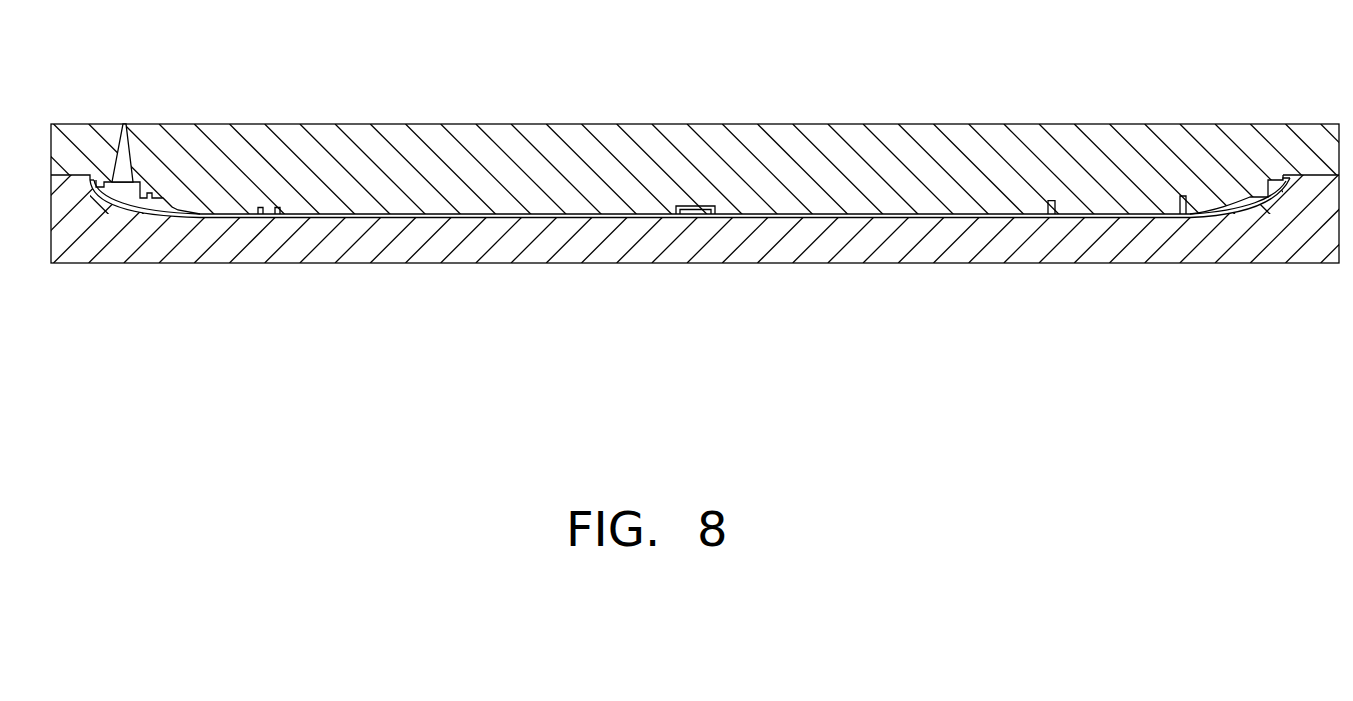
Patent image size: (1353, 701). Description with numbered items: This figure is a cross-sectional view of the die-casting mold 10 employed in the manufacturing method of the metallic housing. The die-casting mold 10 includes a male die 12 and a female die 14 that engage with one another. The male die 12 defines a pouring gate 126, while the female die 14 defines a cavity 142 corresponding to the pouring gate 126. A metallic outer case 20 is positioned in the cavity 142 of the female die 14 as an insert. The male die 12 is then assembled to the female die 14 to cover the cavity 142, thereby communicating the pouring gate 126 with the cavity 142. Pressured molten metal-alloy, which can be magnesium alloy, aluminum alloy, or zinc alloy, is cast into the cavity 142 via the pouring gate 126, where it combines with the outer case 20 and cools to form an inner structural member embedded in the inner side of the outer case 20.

The die-casting mold 10 is at (913, 117).
The male die 12 is at (550, 142).
The female die 14 is at (543, 243).
The metallic outer case 20 is at (247, 217).
The pouring gate 126 is at (122, 130).
The cavity 142 is at (126, 192).